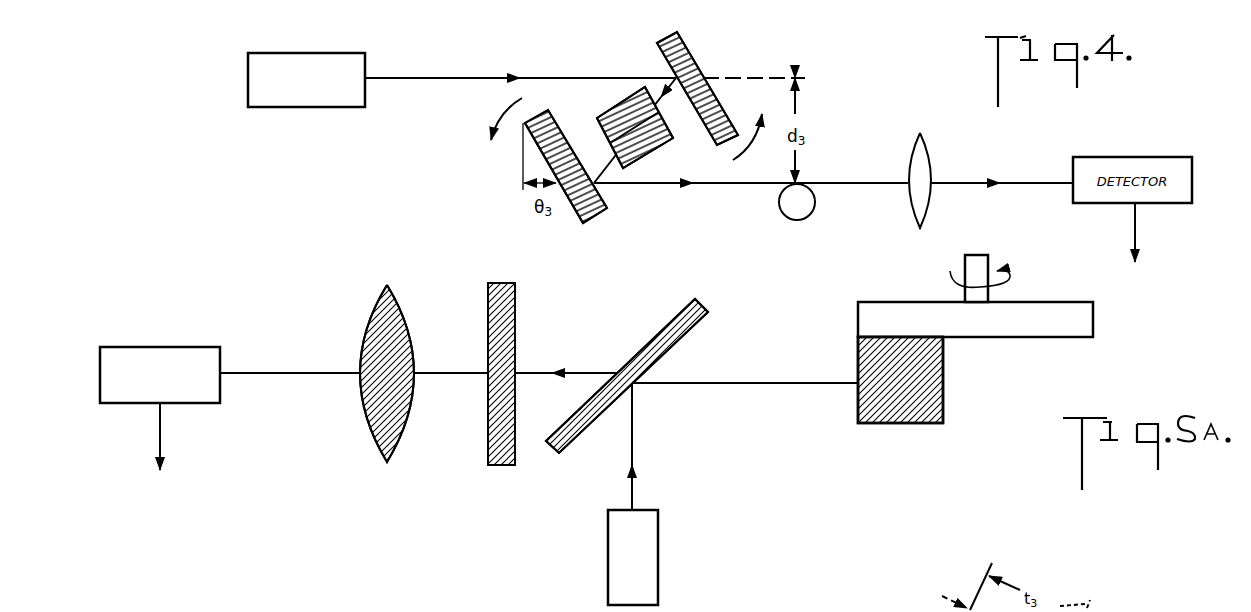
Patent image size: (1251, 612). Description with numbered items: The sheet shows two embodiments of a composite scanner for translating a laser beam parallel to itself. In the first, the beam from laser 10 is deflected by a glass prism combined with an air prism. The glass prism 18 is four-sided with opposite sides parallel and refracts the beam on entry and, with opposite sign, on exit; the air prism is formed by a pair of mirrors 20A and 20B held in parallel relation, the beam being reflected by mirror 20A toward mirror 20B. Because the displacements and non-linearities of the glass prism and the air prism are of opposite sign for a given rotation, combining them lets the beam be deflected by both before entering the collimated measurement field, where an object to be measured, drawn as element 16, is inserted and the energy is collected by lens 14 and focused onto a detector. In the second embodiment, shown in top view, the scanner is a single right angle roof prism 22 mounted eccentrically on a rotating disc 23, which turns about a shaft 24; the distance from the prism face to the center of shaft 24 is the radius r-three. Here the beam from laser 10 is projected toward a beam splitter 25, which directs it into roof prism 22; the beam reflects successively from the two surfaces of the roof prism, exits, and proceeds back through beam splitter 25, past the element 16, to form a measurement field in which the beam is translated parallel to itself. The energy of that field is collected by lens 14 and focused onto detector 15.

In FIG. 4, the laser 10 is at (370, 57).
In FIG. 5A, the laser 10 is at (660, 545).
In FIG. 4, the collecting lens 14 is at (928, 147).
In FIG. 5A, the collecting lens 14 is at (397, 436).
In FIG. 5A, the detector 15 is at (221, 404).
In FIG. 4, the plate / optical element 16 is at (808, 209).
In FIG. 5A, the plate / optical element 16 is at (494, 467).
In FIG. 4, the glass prism 18 is at (650, 150).
In FIG. 4, the mirror 20A is at (684, 49).
In FIG. 4, the mirror 20B is at (608, 213).
In FIG. 5A, the right angle roof prism 22 is at (900, 424).
In FIG. 5A, the rotating disc 23 is at (1060, 309).
In FIG. 5A, the shaft 24 is at (975, 256).
In FIG. 5A, the beam splitter 25 is at (692, 330).